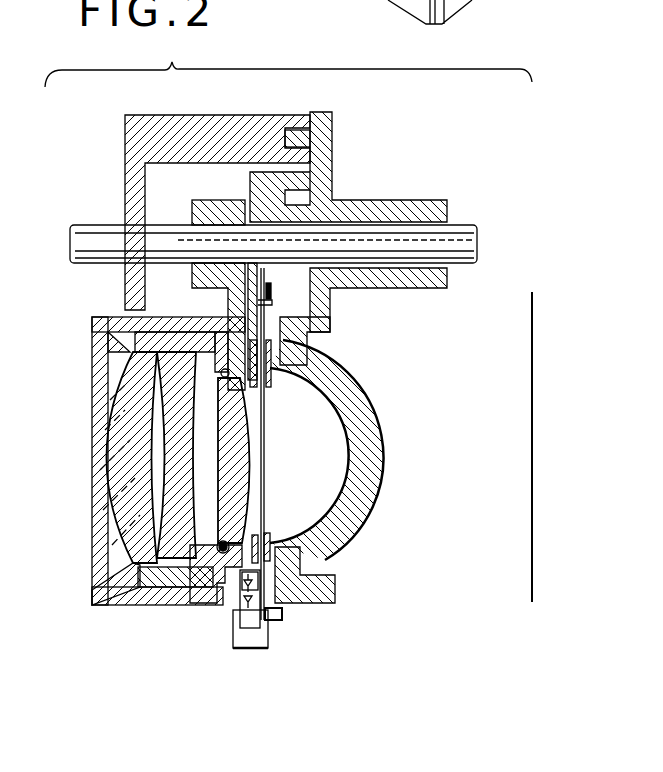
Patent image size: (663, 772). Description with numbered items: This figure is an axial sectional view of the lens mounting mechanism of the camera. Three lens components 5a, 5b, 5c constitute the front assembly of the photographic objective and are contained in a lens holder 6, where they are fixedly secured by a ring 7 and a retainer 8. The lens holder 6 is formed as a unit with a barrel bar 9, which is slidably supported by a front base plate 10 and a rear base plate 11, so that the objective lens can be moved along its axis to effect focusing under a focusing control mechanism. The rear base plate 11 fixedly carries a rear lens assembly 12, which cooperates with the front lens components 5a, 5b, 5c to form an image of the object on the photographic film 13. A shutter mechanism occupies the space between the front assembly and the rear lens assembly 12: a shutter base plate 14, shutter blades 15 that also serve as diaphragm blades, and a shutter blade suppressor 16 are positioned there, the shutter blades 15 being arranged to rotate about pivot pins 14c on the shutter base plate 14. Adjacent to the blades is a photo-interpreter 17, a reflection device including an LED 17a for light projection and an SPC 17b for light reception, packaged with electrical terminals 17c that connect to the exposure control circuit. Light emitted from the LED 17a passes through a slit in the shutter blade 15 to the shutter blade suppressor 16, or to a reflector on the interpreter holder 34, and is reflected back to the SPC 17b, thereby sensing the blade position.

The lens component 5a is at (115, 512).
The lens component 5b is at (175, 428).
The lens component 5c is at (238, 480).
The lens holder 6 is at (145, 590).
The ring 7 is at (222, 543).
The retainer 8 is at (108, 600).
The barrel bar 9 is at (378, 232).
The front base plate 10 is at (193, 120).
The rear base plate 11 is at (417, 282).
The rear lens assembly 12 is at (355, 534).
The photographic film 13 is at (530, 480).
The shutter base plate 14 is at (266, 284).
The pivot pin 14c is at (280, 312).
The shutter blade 15 is at (266, 447).
The shutter blade suppressor 16 is at (272, 298).
The photo-interpreter 17 is at (254, 624).
The LED 17a is at (240, 584).
The SPC 17b is at (250, 608).
The electrical terminals 17c is at (275, 618).
The interpreter holder 34 is at (265, 645).